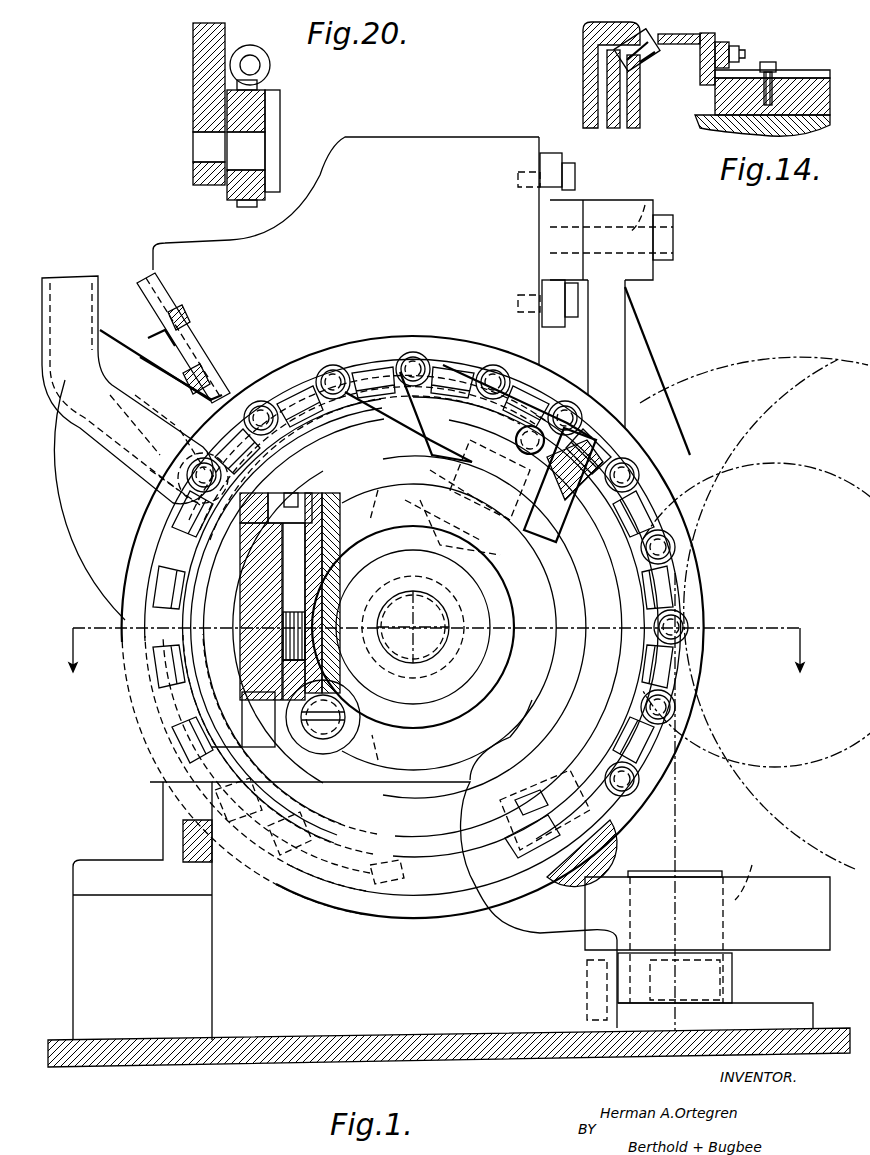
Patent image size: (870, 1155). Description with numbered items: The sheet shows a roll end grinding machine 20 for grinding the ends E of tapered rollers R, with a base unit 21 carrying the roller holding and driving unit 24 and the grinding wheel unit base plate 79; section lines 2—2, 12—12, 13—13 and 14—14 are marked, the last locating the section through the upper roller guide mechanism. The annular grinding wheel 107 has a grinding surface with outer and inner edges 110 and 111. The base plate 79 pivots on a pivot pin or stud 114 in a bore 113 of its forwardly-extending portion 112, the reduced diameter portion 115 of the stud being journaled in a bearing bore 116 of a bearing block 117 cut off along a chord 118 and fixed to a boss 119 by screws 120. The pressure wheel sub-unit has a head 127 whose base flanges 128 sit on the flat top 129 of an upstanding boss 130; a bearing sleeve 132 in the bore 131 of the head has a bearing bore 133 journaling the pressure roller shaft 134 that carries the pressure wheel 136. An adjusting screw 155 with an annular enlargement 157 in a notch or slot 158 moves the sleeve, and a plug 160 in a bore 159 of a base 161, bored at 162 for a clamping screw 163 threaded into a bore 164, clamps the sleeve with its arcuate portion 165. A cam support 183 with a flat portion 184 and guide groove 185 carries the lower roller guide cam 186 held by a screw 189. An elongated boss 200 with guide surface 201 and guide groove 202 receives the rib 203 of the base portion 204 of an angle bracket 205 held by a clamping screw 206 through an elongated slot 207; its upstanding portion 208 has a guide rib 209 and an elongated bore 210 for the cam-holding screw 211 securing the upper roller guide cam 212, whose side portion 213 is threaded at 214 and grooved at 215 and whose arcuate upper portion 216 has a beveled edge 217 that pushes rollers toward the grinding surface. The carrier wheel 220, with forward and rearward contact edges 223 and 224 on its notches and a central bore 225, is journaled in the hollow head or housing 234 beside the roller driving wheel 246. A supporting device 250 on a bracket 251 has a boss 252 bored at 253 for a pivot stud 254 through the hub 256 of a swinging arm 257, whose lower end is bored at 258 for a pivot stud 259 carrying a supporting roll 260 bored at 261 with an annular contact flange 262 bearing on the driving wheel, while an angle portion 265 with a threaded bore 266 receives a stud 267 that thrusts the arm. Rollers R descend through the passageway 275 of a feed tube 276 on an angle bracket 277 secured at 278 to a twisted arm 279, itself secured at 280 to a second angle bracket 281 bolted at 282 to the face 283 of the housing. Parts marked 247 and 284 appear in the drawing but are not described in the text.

In FIG. 1, the section line 2- 2 is at (435, 664).
In FIG. 1, the section line 12- 12 is at (685, 785).
In FIG. 1, the section line 13- 13 is at (515, 758).
In FIG. 1, the section line 14— 14 is at (588, 376).
In FIG. 1, the roll end grinding machine 20 is at (135, 758).
In FIG. 1, the base unit 21 is at (150, 1030).
In FIG. 1, the roller holding and driving unit 24 is at (366, 332).
In FIG. 1, the grinding wheel unit base plate 79 is at (808, 878).
In FIG. 1, the annular grinding wheel 107 is at (766, 352).
In FIG. 1, the outer edge 110 is at (552, 602).
In FIG. 1, the inner edge 111 is at (713, 506).
In FIG. 1, the forwardly-extending portion 112 is at (805, 950).
In FIG. 1, the bore 113 is at (756, 876).
In FIG. 1, the pivot pin or stud 114 is at (690, 870).
In FIG. 1, the reduced diameter portion 115 is at (664, 1058).
In FIG. 1, the bearing bore 116 is at (587, 986).
In FIG. 1, the bearing block 117 is at (587, 968).
In FIG. 1, the chord 118 is at (733, 966).
In FIG. 1, the boss 119 is at (790, 1005).
In FIG. 1, the screws 120 is at (683, 945).
In FIG. 14, the head 127 is at (813, 91).
In FIG. 1, the head 127 is at (165, 708).
In FIG. 1, the base flanges 128 is at (165, 785).
In FIG. 1, the flat top 129 is at (416, 782).
In FIG. 1, the upstanding boss 130 is at (232, 967).
In FIG. 1, the bore 131 is at (343, 535).
In FIG. 14, the bearing sleeve 132 is at (792, 126).
In FIG. 1, the bearing sleeve 132 is at (468, 680).
In FIG. 1, the bearing bore 133 is at (505, 655).
In FIG. 1, the pressure roller shaft 134 is at (413, 627).
In FIG. 14, the pressure wheel 136 is at (636, 130).
In FIG. 1, the adjusting screw 155 is at (340, 725).
In FIG. 1, the annular enlargement 157 is at (330, 755).
In FIG. 1, the notch or slot 158 is at (398, 730).
In FIG. 1, the bore 159 is at (330, 500).
In FIG. 1, the plug 160 is at (268, 603).
In FIG. 1, the base 161 is at (256, 574).
In FIG. 1, the bore 162 is at (311, 630).
In FIG. 1, the clamping screw 163 is at (305, 498).
In FIG. 1, the bore 164 is at (245, 655).
In FIG. 1, the arcuate portion 165 is at (326, 578).
In FIG. 1, the cam support 183 is at (572, 880).
In FIG. 1, the flat portion 184 is at (612, 840).
In FIG. 1, the transverse guide groove 185 is at (525, 885).
In FIG. 1, the lower roller guide cam 186 is at (488, 918).
In FIG. 1, the screw 189 is at (530, 802).
In FIG. 1, the elongated boss 200 is at (462, 476).
In FIG. 1, the flat elongated guide surface 201 is at (552, 540).
In FIG. 1, the elongated guide groove 202 is at (500, 536).
In FIG. 1, the rib 203 is at (478, 505).
In FIG. 14, the base portion 204 is at (790, 80).
In FIG. 1, the base portion 204 is at (480, 451).
In FIG. 1, the angle bracket 205 is at (495, 440).
In FIG. 14, the clamping screw 206 is at (770, 64).
In FIG. 1, the clamping screw 206 is at (585, 515).
In FIG. 14, the elongated slot 207 is at (772, 80).
In FIG. 1, the upstanding portion 208 is at (625, 442).
In FIG. 14, the transverse guide rib 209 is at (707, 36).
In FIG. 14, the bore 210 is at (735, 50).
In FIG. 1, the bore 210 is at (516, 430).
In FIG. 14, the cam-holding screw 211 is at (743, 52).
In FIG. 1, the cam-holding screw 211 is at (552, 392).
In FIG. 14, the upper roller guide cam 212 is at (648, 70).
In FIG. 1, the upper roller guide cam 212 is at (412, 455).
In FIG. 14, the side portion 213 is at (700, 72).
In FIG. 1, the side portion 213 is at (388, 438).
In FIG. 14, the threaded bore 214 is at (675, 50).
In FIG. 14, the elongated groove 215 is at (705, 90).
In FIG. 1, the elongated groove 215 is at (440, 404).
In FIG. 14, the upper portion 216 is at (690, 34).
In FIG. 14, the beveled arcuate edge 217 is at (664, 36).
In FIG. 14, the rotary roller holder or carrier wheel 220 is at (613, 128).
In FIG. 1, the rotary roller holder or carrier wheel 220 is at (150, 578).
In FIG. 1, the forward contact edge 223 is at (160, 648).
In FIG. 1, the rearward contact edge 224 is at (165, 688).
In FIG. 1, the bore 225 is at (652, 205).
In FIG. 1, the hollow head or housing 234 is at (452, 145).
In FIG. 14, the roller driving wheel 246 is at (580, 92).
In FIG. 14, the arm top 247 is at (583, 26).
In FIG. 1, the supporting device 250 is at (618, 190).
In FIG. 1, the bracket 251 is at (541, 152).
In FIG. 1, the boss 252 is at (572, 205).
In FIG. 1, the bore 253 is at (562, 228).
In FIG. 1, the pivot pin or stud 254 is at (665, 231).
In FIG. 1, the hub 256 is at (650, 272).
In FIG. 20, the swinging arm 257 is at (193, 37).
In FIG. 1, the swinging arm 257 is at (617, 328).
In FIG. 20, the bore 258 is at (210, 186).
In FIG. 1, the bore 258 is at (600, 680).
In FIG. 20, the pivot stud 259 is at (275, 136).
In FIG. 20, the supporting roll 260 is at (288, 98).
In FIG. 1, the supporting roll 260 is at (680, 572).
In FIG. 20, the bore 261 is at (257, 172).
In FIG. 20, the annular contact flange 262 is at (238, 206).
In FIG. 20, the angle portion 265 is at (272, 60).
In FIG. 1, the angle portion 265 is at (740, 452).
In FIG. 20, the threaded horizontal bore 266 is at (258, 47).
In FIG. 20, the stud 267 is at (258, 70).
In FIG. 1, the passageway 275 is at (98, 278).
In FIG. 1, the feed tube 276 is at (127, 390).
In FIG. 1, the angle bracket 277 is at (132, 488).
In FIG. 1, the securing point 278 is at (185, 372).
In FIG. 1, the twisted arm 279 is at (176, 328).
In FIG. 1, the securing point 280 is at (158, 362).
In FIG. 1, the second angle bracket 281 is at (160, 292).
In FIG. 1, the securing point 282 is at (265, 402).
In FIG. 1, the face 283 is at (153, 254).
In FIG. 1, the ring 284 is at (330, 470).
In FIG. 14, the end E is at (583, 38).
In FIG. 14, the rollers R is at (637, 50).
In FIG. 1, the rollers R is at (320, 362).